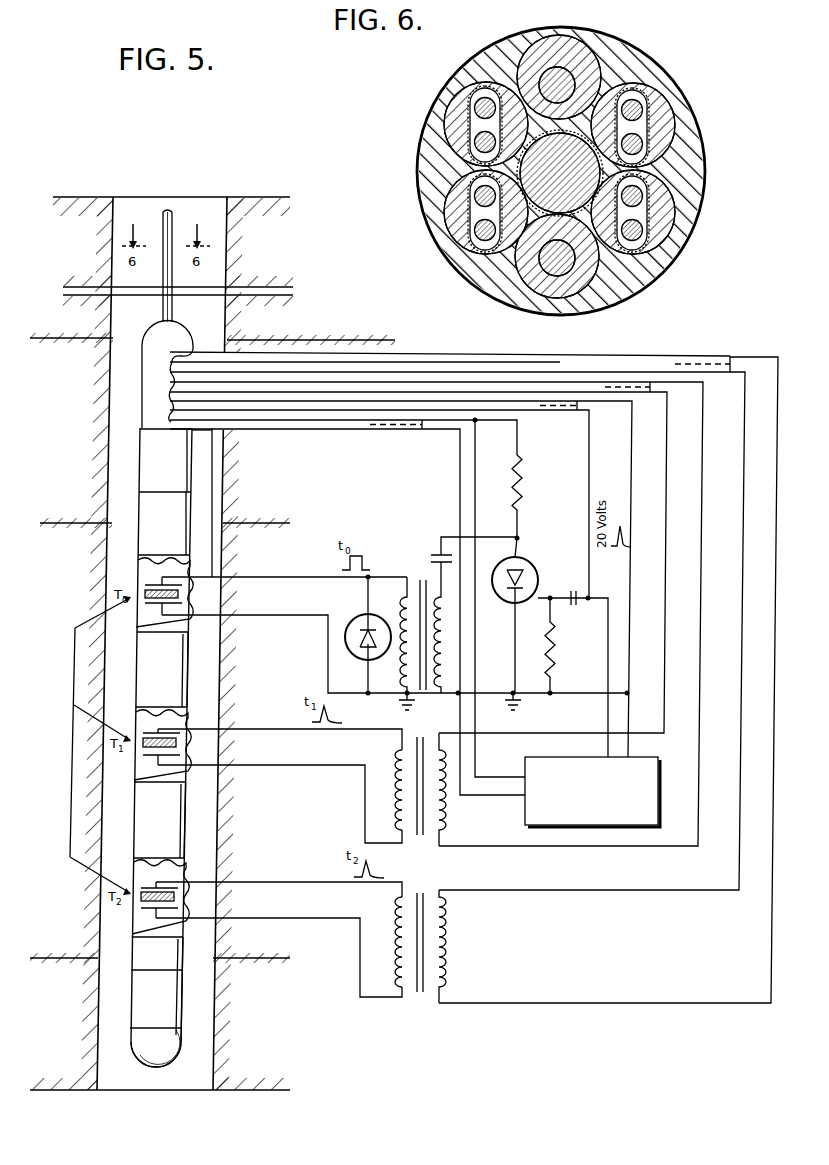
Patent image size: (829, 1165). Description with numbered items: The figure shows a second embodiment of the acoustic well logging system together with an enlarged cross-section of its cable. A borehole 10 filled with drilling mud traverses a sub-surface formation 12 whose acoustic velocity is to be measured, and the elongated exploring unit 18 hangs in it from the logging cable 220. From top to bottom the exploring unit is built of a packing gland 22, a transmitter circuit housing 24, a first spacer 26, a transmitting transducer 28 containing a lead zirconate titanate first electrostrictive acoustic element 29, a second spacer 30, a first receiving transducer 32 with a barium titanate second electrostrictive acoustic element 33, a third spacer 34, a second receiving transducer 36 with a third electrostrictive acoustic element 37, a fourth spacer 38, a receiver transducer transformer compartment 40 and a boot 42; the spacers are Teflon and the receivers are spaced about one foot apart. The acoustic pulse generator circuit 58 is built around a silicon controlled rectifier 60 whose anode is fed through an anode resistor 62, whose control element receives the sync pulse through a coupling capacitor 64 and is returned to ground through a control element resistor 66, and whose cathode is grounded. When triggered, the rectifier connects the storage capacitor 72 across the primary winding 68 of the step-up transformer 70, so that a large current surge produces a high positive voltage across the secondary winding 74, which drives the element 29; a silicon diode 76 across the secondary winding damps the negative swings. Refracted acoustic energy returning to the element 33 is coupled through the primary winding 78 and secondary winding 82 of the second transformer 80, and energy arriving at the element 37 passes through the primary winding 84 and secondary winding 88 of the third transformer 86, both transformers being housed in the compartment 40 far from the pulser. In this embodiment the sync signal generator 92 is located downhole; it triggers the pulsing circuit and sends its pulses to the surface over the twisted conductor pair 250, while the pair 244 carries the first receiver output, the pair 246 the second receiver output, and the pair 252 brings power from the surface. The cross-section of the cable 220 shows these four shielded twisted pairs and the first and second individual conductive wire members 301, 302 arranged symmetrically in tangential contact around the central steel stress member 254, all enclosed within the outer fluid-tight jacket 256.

In FIG. 5, the borehole 10 is at (222, 200).
In FIG. 5, the sub-surface formation 12 is at (76, 437).
In FIG. 5, the exploring unit 18 is at (194, 438).
In FIG. 5, the packing gland 22 is at (142, 340).
In FIG. 5, the transmitter circuit housing 24 is at (139, 455).
In FIG. 5, the first spacer 26 is at (139, 519).
In FIG. 5, the transmitting transducer 28 is at (138, 560).
In FIG. 5, the first electrostrictive acoustic element 29 is at (182, 594).
In FIG. 5, the second spacer 30 is at (135, 670).
In FIG. 5, the first receiving transducer 32 is at (134, 772).
In FIG. 5, the second electrostrictive acoustic element 33 is at (180, 745).
In FIG. 5, the third spacer 34 is at (133, 842).
In FIG. 5, the second receiving transducer 36 is at (133, 931).
In FIG. 5, the third electrostrictive acoustic element 37 is at (178, 898).
In FIG. 5, the fourth spacer 38 is at (132, 975).
In FIG. 5, the receiver transducer transformer compartment 40 is at (132, 1005).
In FIG. 5, the boot 42 is at (143, 1056).
In FIG. 5, the acoustic pulse generator circuit 58 is at (500, 631).
In FIG. 5, the silicon controlled rectifier 60 is at (523, 561).
In FIG. 5, the anode resistor 62 is at (517, 516).
In FIG. 5, the coupling capacitor 64 is at (578, 606).
In FIG. 5, the control element resistor 66 is at (554, 672).
In FIG. 5, the primary winding 68 is at (448, 664).
In FIG. 5, the step-up transformer 70 is at (431, 698).
In FIG. 5, the capacitor 72 is at (432, 562).
In FIG. 5, the secondary winding 74 is at (404, 614).
In FIG. 5, the silicon diode 76 is at (346, 618).
In FIG. 5, the primary winding 78 is at (400, 765).
In FIG. 5, the second transformer 80 is at (448, 849).
In FIG. 5, the secondary winding 82 is at (442, 814).
In FIG. 5, the primary winding 84 is at (396, 931).
In FIG. 5, the third transformer 86 is at (418, 1000).
In FIG. 5, the secondary winding 88 is at (445, 936).
In FIG. 5, the sync signal generator 92 is at (525, 822).
In FIG. 5, the logging cable 220 is at (174, 304).
In FIG. 6, the logging cable 220 is at (657, 64).
In FIG. 5, the twisted conductor pair 244 is at (648, 400).
In FIG. 6, the twisted conductor pair 244 is at (674, 123).
In FIG. 5, the twisted conductor pair 246 is at (718, 351).
In FIG. 6, the twisted conductor pair 246 is at (672, 172).
In FIG. 5, the twisted conductor pair 250 is at (557, 412).
In FIG. 6, the twisted conductor pair 250 is at (451, 75).
In FIG. 5, the conductor pair 252 is at (347, 430).
In FIG. 6, the conductor pair 252 is at (444, 173).
In FIG. 6, the stress member 254 is at (498, 292).
In FIG. 5, the outer fluid-tight jacket 256 is at (163, 311).
In FIG. 6, the outer fluid-tight jacket 256 is at (677, 88).
In FIG. 6, the first individual conductive wire member 301 is at (576, 70).
In FIG. 6, the second individual conductive wire member 302 is at (532, 319).